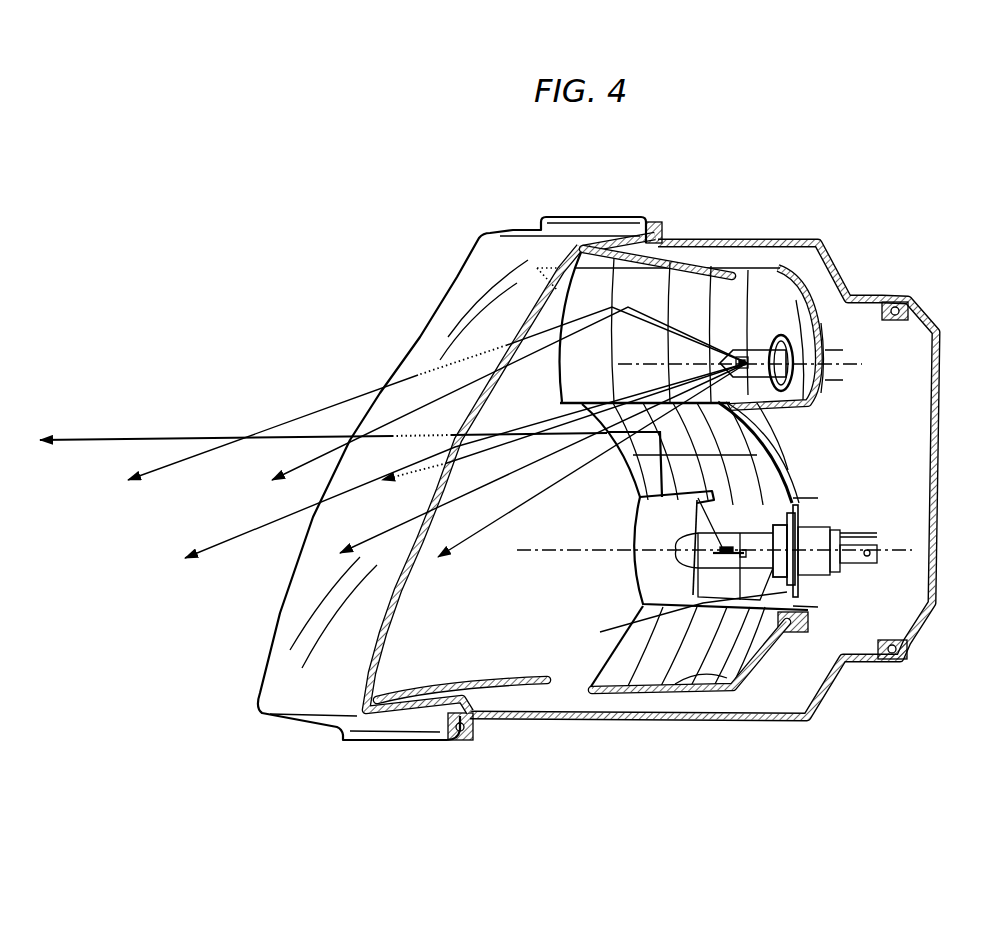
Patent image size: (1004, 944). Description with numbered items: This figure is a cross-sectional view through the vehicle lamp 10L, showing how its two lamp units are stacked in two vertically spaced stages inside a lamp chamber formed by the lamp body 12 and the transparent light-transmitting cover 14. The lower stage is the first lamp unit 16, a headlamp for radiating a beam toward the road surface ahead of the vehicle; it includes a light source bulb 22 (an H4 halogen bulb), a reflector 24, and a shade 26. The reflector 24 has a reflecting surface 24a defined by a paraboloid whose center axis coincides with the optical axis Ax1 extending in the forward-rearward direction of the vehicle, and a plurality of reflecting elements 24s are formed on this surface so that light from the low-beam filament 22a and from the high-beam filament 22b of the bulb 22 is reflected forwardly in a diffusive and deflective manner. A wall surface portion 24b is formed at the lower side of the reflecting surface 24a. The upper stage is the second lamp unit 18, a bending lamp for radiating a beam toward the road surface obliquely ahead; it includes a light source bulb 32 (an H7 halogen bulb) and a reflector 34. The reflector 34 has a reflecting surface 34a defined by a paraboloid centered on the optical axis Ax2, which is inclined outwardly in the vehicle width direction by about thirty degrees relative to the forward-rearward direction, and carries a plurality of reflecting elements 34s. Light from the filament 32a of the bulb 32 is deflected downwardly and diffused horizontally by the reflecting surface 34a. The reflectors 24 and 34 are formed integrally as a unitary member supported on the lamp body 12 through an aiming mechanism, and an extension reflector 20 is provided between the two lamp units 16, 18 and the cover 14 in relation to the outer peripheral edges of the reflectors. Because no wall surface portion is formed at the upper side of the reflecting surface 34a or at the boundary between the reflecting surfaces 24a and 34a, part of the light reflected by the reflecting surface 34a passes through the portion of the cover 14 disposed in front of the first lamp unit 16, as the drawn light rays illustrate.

The vehicle lamp 10L is at (842, 220).
The lamp body 12 is at (834, 255).
The light-transmitting cover 14 is at (450, 279).
The first lamp unit 16 is at (858, 510).
The second lamp unit 18 is at (863, 352).
The extension reflector 20 is at (487, 677).
The light source bulb 22 is at (743, 525).
The low-beam filament 22a is at (721, 548).
The high-beam filament 22b is at (715, 556).
The reflector 24 is at (770, 434).
The reflecting surface 24a is at (650, 621).
The wall surface portion 24b is at (743, 677).
The reflecting elements 24s is at (650, 472).
The shade 26 is at (635, 577).
The light source bulb 32 is at (762, 344).
The filament 32a is at (745, 354).
The reflector 34 is at (808, 295).
The reflecting surface 34a is at (713, 293).
The reflecting elements 34s is at (618, 283).
The optical axis Ax1 is at (552, 554).
The optical axis Ax2 is at (616, 364).